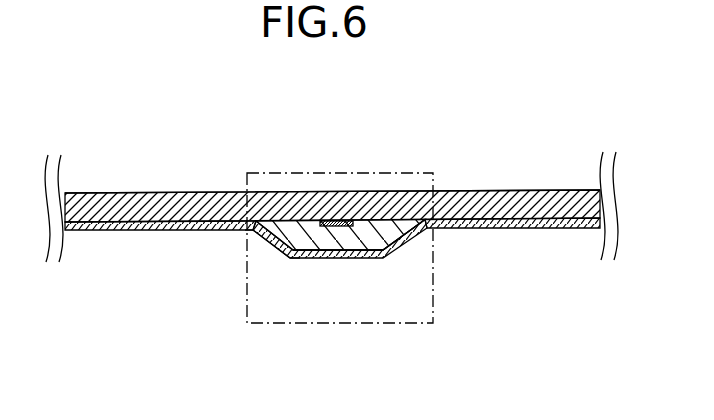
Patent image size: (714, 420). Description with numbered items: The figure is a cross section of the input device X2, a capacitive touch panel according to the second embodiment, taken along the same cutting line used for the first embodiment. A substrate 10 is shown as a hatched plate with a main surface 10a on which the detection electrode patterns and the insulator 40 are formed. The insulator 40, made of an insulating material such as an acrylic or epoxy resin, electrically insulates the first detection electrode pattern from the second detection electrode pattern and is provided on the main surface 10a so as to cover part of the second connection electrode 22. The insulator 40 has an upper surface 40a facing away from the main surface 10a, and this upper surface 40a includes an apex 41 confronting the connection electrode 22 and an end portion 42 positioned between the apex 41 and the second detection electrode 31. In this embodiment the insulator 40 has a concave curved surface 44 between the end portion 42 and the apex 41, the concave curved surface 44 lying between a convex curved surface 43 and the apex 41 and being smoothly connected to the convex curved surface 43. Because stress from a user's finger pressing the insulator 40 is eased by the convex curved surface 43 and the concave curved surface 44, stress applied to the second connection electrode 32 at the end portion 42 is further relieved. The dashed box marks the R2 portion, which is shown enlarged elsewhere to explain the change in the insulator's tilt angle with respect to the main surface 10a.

The substrate 10 is at (478, 191).
The main surface of the substrate 10a is at (527, 190).
The second connection electrode 22 is at (340, 221).
The second detection electrode 31 is at (152, 232).
The second connection electrode 32 is at (322, 258).
The insulator 40 is at (383, 245).
The upper surface of the insulator 40a is at (410, 237).
The apex 41 is at (345, 252).
The end portion 42 is at (251, 231).
The convex curved surface 43 is at (258, 237).
The concave curved surface 44 is at (290, 259).
The R2 portion R2 is at (275, 325).
The input device X2 is at (550, 112).